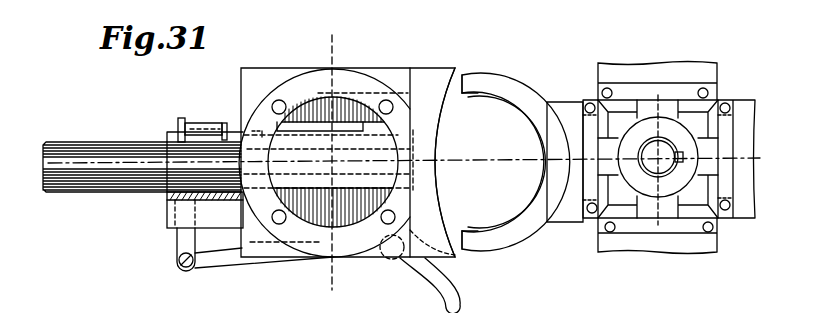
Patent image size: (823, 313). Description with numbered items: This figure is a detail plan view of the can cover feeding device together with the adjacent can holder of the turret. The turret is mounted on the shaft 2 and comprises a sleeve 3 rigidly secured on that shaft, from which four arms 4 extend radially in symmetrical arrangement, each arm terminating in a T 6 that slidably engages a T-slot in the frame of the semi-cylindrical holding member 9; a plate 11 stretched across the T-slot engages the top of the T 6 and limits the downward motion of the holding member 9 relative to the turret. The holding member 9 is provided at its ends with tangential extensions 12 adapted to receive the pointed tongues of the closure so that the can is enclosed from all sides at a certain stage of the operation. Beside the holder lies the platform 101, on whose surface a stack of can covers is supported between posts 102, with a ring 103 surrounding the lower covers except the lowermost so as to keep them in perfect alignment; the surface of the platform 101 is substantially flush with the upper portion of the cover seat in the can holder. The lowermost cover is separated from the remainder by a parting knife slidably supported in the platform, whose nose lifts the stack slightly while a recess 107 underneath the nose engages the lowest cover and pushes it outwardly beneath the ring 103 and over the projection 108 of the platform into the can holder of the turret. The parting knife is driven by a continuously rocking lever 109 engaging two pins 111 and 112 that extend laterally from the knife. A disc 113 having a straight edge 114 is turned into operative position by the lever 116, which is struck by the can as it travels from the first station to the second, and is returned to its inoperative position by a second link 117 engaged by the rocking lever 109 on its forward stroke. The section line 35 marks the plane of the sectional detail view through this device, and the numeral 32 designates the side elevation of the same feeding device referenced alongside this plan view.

The shaft 2 is at (666, 158).
The sleeve 3 is at (683, 138).
The arms 4 is at (658, 210).
The T 6 is at (655, 100).
The holding member 9 is at (522, 93).
The plate 11 is at (677, 92).
The tangential extensions 12 is at (463, 83).
The shaft 32 is at (401, 167).
The axis 35 is at (331, 164).
The platform 101 is at (318, 108).
The posts 102 is at (281, 102).
The ring 103 is at (343, 77).
The recess 107 is at (177, 243).
The projection 108 is at (433, 122).
The rocking lever 109 is at (195, 123).
The pin 111 is at (225, 123).
The pin 112 is at (178, 124).
The disc 113 is at (215, 123).
The straight edge 114 is at (173, 163).
The lever 116 is at (213, 262).
The second link 117 is at (260, 128).